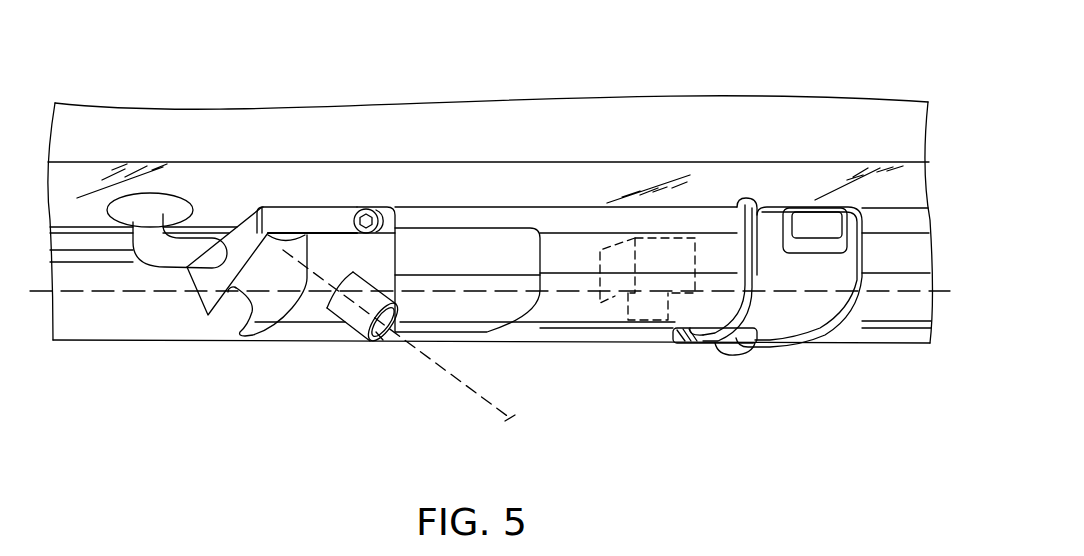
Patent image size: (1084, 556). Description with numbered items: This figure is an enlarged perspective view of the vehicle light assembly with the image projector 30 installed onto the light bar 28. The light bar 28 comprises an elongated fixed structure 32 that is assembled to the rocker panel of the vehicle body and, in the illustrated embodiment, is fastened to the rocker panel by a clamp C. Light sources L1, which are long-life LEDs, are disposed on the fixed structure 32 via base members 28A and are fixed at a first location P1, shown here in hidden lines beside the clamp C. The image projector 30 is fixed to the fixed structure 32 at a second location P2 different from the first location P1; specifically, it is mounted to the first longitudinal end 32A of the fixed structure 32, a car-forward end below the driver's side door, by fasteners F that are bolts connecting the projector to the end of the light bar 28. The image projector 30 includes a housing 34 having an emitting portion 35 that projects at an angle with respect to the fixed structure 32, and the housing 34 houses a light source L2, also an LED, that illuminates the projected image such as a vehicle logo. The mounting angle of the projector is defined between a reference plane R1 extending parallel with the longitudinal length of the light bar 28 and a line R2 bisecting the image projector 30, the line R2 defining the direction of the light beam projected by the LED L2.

The light bar 28 is at (811, 78).
The base member 28A is at (478, 228).
The image projector 30 is at (263, 350).
The fixed structure 32 is at (583, 322).
The first longitudinal end 32A is at (382, 207).
The housing 34 is at (305, 318).
The emitting portion 35 is at (380, 290).
The fastener F is at (357, 219).
The clamp C is at (806, 315).
The light source L1 is at (655, 322).
The light source L2 is at (378, 333).
The reference plane R1 is at (118, 296).
The line R2 is at (475, 400).
The first location P1 is at (417, 404).
The second location P2 is at (309, 410).